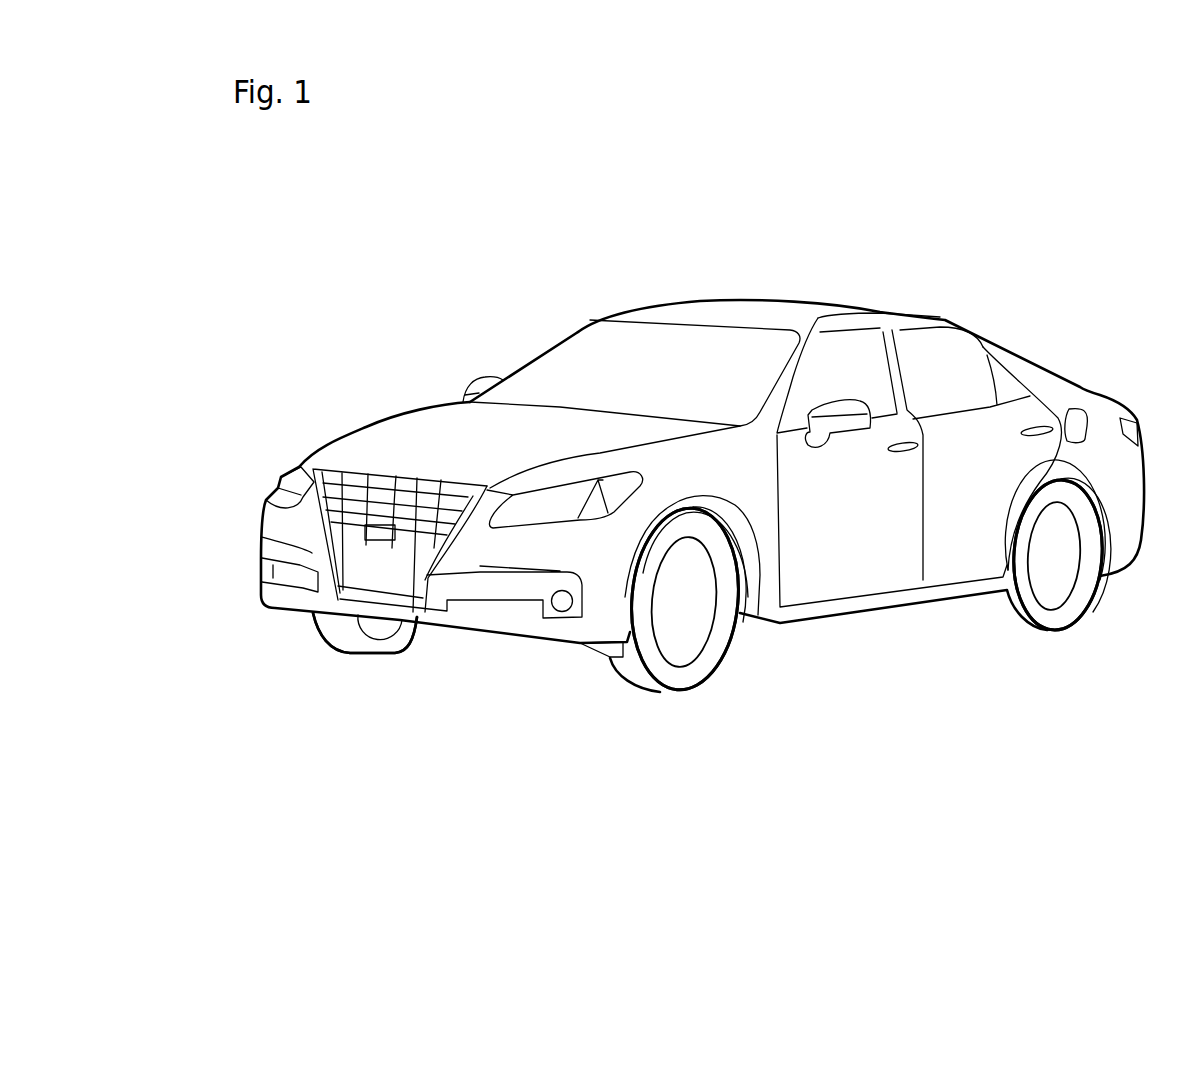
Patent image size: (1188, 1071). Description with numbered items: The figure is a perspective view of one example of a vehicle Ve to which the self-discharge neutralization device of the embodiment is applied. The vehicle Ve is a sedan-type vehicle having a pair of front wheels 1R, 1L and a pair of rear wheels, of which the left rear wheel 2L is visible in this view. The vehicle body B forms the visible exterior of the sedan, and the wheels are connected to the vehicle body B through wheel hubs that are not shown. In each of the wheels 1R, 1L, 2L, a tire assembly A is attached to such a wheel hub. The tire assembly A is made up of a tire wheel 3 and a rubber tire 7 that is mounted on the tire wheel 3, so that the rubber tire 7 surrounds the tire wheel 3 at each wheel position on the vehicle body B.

The vehicle Ve is at (945, 156).
The vehicle body B is at (1085, 345).
The tire assembly A is at (790, 678).
The rubber tire 7 is at (317, 638).
The tire wheel 3 is at (698, 620).
The front wheel 1R is at (331, 688).
The front wheel 1L is at (657, 730).
The rear wheel 2L is at (1053, 663).